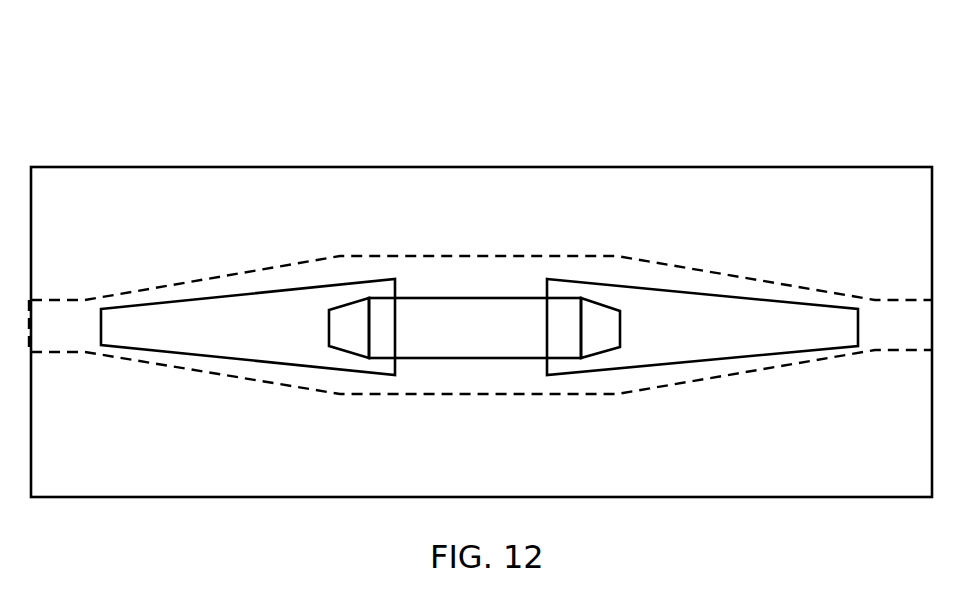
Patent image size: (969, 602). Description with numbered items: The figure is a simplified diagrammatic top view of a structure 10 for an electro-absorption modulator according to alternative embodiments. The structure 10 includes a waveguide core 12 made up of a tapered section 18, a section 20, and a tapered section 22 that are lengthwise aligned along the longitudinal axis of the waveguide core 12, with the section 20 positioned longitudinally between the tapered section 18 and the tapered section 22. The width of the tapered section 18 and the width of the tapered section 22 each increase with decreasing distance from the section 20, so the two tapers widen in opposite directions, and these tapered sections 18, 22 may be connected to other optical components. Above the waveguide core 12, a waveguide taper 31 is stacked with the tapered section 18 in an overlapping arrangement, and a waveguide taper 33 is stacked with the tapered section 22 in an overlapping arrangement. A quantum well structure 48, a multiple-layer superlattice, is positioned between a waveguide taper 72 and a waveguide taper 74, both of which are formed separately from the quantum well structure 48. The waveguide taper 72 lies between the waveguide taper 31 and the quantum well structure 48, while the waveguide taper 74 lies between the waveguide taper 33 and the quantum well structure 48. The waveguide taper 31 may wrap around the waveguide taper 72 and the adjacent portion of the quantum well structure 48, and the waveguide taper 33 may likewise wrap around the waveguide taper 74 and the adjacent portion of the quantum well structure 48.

The structure 10 is at (128, 238).
The waveguide core 12 is at (437, 373).
The tapered section 18 is at (338, 103).
The section 20 is at (615, 137).
The tapered section 22 is at (877, 105).
The waveguide taper 31 is at (168, 317).
The waveguide taper 33 is at (785, 327).
The quantum well structure 48 is at (442, 276).
The waveguide taper 72 is at (357, 331).
The waveguide taper 74 is at (600, 331).